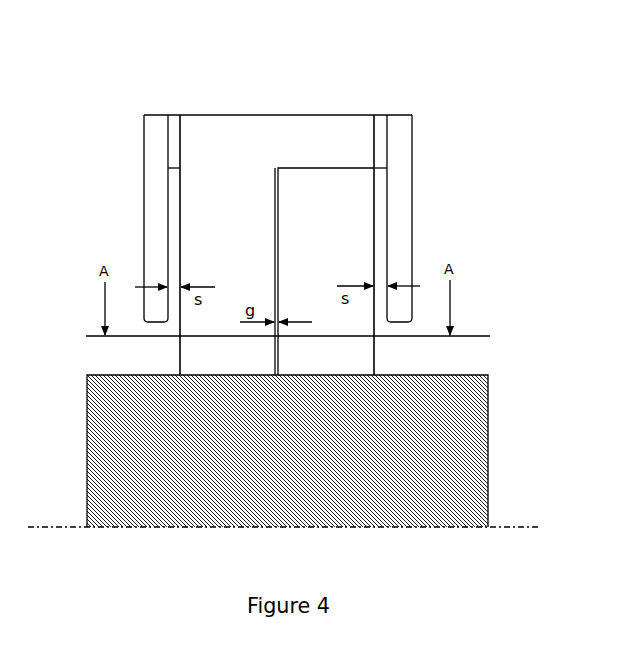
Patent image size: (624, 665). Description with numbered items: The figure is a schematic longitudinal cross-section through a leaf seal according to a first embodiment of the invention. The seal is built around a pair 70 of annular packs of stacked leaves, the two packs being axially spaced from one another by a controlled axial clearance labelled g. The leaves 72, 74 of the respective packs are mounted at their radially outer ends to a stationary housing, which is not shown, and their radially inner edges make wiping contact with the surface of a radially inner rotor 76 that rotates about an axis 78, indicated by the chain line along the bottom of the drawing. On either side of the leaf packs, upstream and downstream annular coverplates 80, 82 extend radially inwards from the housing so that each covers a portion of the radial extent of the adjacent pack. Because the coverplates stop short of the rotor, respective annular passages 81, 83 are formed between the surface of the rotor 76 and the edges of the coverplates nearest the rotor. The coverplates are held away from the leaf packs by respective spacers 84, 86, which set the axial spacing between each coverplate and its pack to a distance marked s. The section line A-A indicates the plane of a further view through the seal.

The pair of annular packs of stacked leaves 70 is at (372, 84).
The leaves of the first pack 72 is at (224, 258).
The leaves of the second pack 74 is at (343, 268).
The rotor 76 is at (107, 393).
The axis 78 is at (450, 524).
The upstream annular coverplate 80 is at (157, 162).
The downstream annular coverplate 82 is at (407, 208).
The first spacer 84 is at (175, 120).
The second spacer 86 is at (383, 115).
The upstream annular passage 81 is at (158, 352).
The downstream annular passage 83 is at (407, 353).